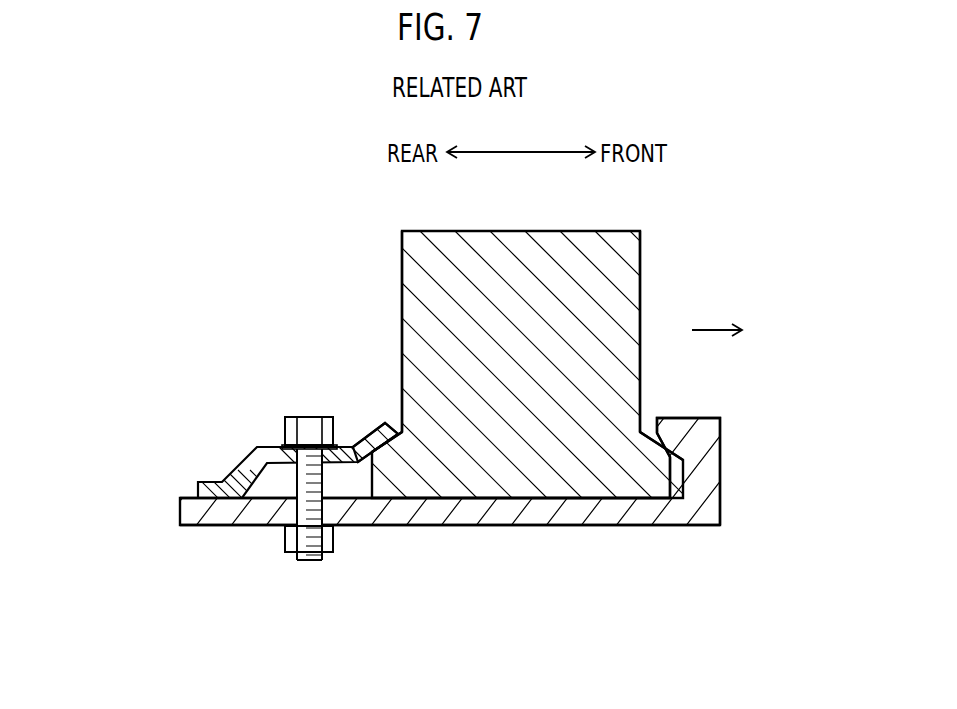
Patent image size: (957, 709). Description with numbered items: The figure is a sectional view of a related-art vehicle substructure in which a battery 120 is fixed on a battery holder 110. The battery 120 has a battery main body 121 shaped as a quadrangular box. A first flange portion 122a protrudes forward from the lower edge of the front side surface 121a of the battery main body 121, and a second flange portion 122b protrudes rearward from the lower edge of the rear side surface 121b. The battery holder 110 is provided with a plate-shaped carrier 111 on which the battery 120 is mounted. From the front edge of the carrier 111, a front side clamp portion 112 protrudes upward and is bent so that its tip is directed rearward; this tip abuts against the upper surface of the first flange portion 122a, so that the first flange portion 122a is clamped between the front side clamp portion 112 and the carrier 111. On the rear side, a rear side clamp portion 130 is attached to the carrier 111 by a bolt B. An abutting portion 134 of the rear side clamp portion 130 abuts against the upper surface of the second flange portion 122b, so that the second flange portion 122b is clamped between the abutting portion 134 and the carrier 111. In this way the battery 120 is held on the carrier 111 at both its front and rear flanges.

The battery 120 is at (525, 321).
The battery main body 121 is at (583, 229).
The front side surface 121a is at (641, 292).
The rear side surface 121b is at (401, 264).
The first flange portion 122a is at (652, 430).
The second flange portion 122b is at (394, 430).
The battery holder 110 is at (480, 508).
The carrier 111 is at (532, 527).
The front side clamp portion 112 is at (698, 418).
The rear side clamp portion 130 is at (289, 446).
The abutting portion 134 is at (363, 437).
The bolt B is at (297, 415).